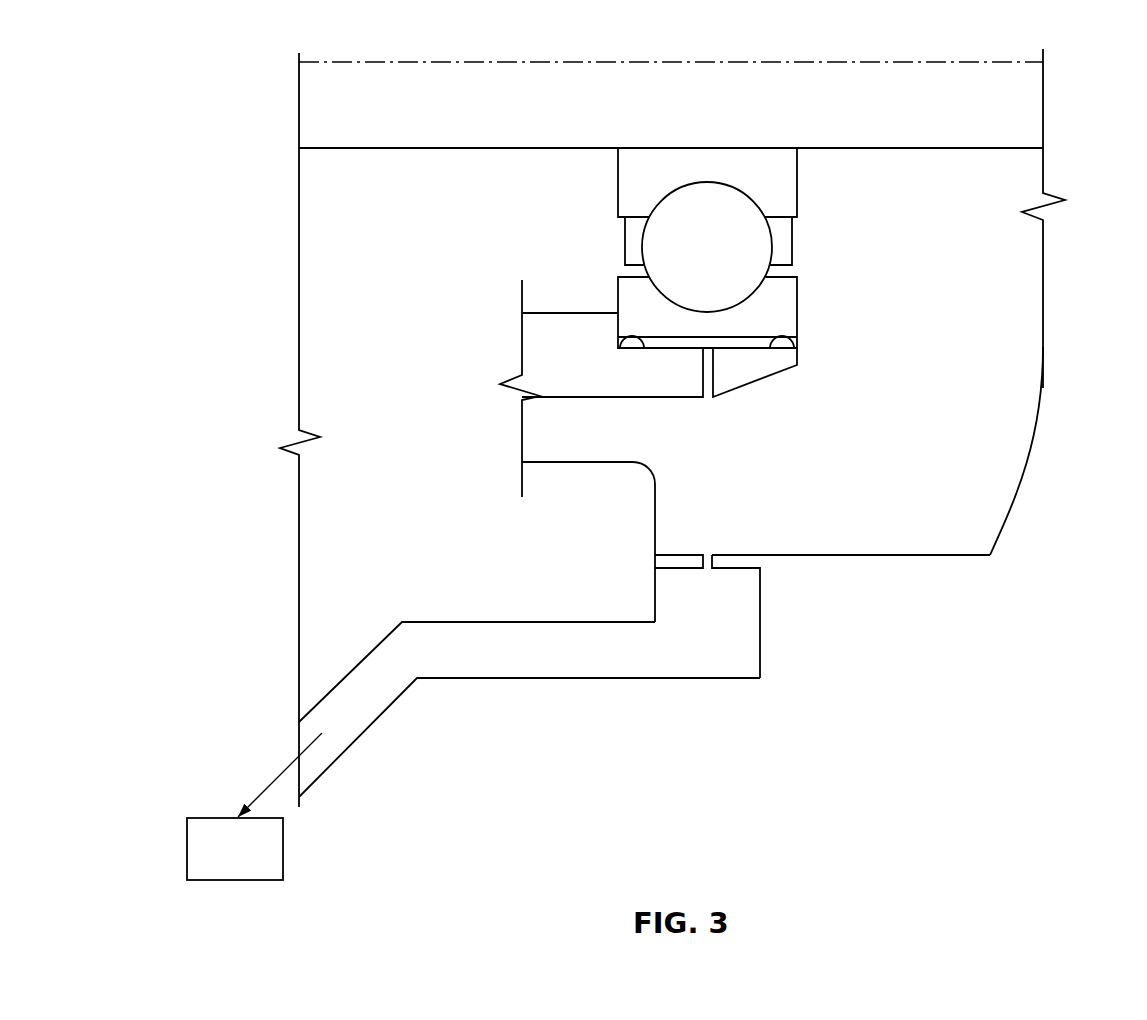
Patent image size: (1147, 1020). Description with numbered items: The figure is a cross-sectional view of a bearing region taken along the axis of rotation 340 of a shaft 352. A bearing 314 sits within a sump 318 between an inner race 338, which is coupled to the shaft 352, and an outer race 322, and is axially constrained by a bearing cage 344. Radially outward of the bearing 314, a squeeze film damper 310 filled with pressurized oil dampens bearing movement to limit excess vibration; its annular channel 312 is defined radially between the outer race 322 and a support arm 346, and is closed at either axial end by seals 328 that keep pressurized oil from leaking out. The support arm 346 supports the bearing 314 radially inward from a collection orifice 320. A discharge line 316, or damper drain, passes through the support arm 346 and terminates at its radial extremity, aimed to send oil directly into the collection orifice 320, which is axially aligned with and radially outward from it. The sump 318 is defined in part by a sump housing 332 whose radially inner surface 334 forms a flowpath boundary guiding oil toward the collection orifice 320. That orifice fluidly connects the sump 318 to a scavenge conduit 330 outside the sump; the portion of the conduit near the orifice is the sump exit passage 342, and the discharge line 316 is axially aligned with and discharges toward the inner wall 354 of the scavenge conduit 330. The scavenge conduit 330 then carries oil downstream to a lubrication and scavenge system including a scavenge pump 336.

The squeeze film damper 310 is at (665, 323).
The annular channel 312 is at (746, 340).
The bearing 314 is at (707, 226).
The discharge line 316 is at (713, 367).
The sump 318 is at (1000, 226).
The collection orifice 320 is at (708, 570).
The outer race 322 is at (635, 307).
The seals 328 is at (622, 340).
The scavenge conduit 330 is at (513, 648).
The sump housing 332 is at (1028, 460).
The radially inner surface 334 is at (907, 555).
The scavenge pump 336 is at (225, 826).
The inner race 338 is at (648, 167).
The axis of rotation 340 is at (523, 57).
The sump exit passage 342 is at (765, 628).
The bearing cage 344 is at (782, 240).
The support arm 346 is at (583, 385).
The shaft 352 is at (370, 141).
The inner wall 354 is at (707, 677).